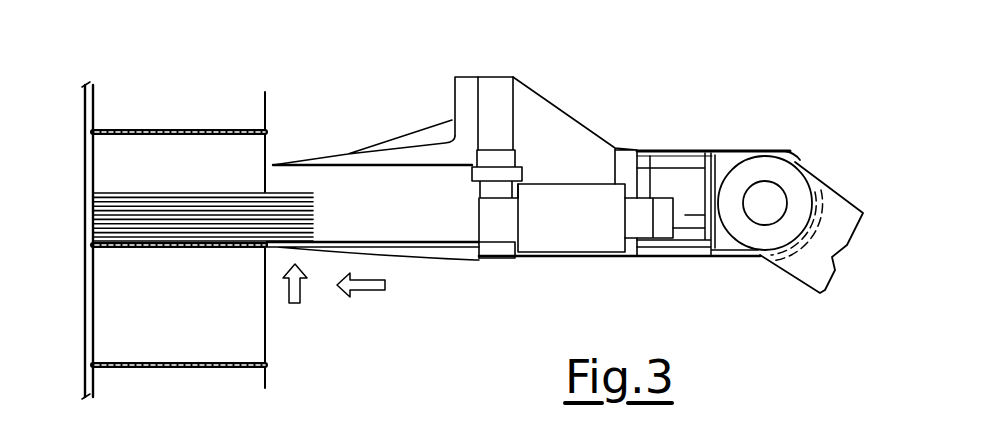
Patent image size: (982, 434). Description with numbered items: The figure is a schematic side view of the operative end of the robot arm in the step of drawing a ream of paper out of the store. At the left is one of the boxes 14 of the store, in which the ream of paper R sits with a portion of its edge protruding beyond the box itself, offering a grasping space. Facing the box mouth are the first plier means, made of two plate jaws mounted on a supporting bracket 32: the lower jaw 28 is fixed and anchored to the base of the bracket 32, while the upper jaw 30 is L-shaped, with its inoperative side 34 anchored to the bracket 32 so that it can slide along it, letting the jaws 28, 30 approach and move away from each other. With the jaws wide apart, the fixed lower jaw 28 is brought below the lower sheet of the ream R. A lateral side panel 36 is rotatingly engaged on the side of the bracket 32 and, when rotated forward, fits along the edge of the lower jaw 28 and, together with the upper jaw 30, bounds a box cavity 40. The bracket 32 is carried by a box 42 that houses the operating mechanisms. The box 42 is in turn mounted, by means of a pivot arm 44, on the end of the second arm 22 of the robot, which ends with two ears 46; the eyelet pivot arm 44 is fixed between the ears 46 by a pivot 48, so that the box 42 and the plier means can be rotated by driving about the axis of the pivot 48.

The box 14 is at (174, 160).
The ream of paper R is at (222, 212).
The second arm 22 is at (812, 260).
The lower jaw 28 is at (428, 250).
The upper jaw 30 is at (392, 158).
The supporting bracket 32 is at (495, 90).
The inoperative side 34 is at (465, 90).
The lateral side panel 36 is at (566, 232).
The box cavity 40 is at (391, 221).
The box 42 is at (575, 143).
The pivot arm 44 is at (655, 163).
The ears 46 is at (790, 182).
The pivot 48 is at (757, 188).